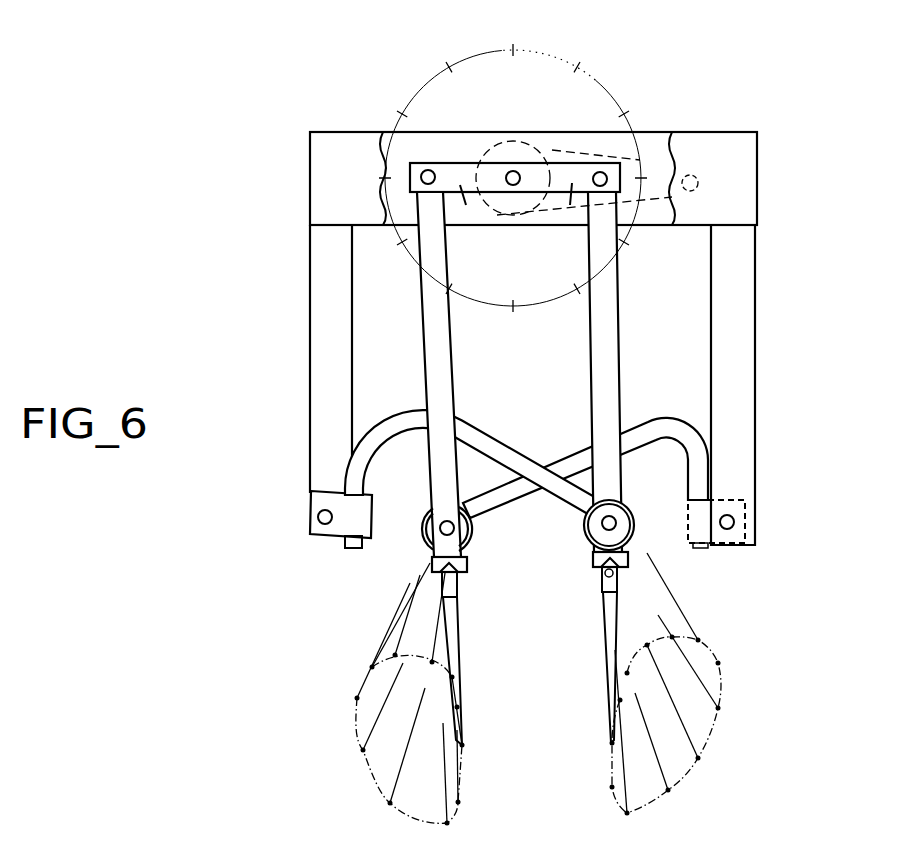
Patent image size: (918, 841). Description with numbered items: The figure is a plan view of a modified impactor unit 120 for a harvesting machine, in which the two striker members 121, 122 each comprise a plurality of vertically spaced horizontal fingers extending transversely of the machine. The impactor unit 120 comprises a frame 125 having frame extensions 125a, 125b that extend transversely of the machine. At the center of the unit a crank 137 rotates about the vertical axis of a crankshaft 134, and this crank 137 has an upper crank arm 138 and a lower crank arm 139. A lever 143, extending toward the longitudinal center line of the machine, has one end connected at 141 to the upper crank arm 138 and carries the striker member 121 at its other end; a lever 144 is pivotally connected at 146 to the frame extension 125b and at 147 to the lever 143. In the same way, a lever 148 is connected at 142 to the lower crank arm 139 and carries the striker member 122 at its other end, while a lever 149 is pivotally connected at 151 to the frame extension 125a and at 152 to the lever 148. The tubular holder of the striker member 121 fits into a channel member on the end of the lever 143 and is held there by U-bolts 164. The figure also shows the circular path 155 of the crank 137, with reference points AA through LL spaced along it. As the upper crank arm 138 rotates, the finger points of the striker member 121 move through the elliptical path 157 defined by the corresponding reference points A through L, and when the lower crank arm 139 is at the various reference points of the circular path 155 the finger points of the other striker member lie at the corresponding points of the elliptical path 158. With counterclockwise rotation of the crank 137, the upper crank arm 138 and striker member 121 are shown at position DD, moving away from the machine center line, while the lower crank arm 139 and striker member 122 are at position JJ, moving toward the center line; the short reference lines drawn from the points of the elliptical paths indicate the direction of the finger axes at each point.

The impactor unit 120 is at (776, 186).
The striker member 121 is at (596, 620).
The striker member 122 is at (468, 623).
The frame 125 is at (728, 132).
The frame extension 125a is at (757, 364).
The frame extension 125b is at (310, 352).
The crankshaft 134 is at (513, 171).
The crank 137 is at (522, 200).
The upper crank arm 138 is at (570, 205).
The lower crank arm 139 is at (466, 205).
The connection 141 is at (601, 172).
The connection 142 is at (430, 170).
The lever 143 is at (622, 356).
The lever 144 is at (471, 428).
The pivotal connection 146 is at (325, 524).
The pivotal connection 147 is at (613, 521).
The lever 148 is at (453, 372).
The lever 149 is at (563, 445).
The pivotal connection 151 is at (735, 514).
The pivotal connection 152 is at (433, 512).
The circular path 155 is at (478, 52).
The elliptical path 157 is at (728, 683).
The elliptical path 158 is at (357, 718).
The U-bolts 164 is at (240, 838).